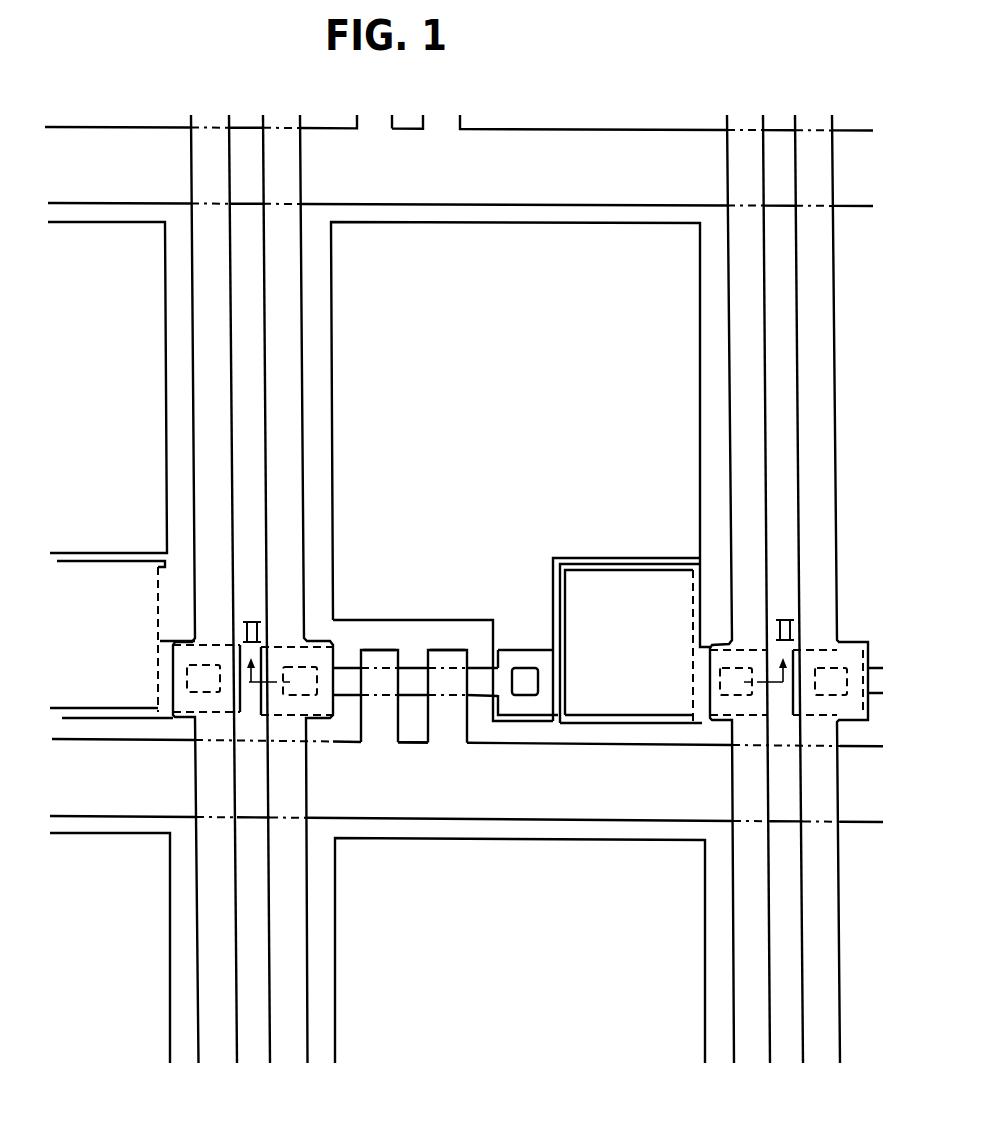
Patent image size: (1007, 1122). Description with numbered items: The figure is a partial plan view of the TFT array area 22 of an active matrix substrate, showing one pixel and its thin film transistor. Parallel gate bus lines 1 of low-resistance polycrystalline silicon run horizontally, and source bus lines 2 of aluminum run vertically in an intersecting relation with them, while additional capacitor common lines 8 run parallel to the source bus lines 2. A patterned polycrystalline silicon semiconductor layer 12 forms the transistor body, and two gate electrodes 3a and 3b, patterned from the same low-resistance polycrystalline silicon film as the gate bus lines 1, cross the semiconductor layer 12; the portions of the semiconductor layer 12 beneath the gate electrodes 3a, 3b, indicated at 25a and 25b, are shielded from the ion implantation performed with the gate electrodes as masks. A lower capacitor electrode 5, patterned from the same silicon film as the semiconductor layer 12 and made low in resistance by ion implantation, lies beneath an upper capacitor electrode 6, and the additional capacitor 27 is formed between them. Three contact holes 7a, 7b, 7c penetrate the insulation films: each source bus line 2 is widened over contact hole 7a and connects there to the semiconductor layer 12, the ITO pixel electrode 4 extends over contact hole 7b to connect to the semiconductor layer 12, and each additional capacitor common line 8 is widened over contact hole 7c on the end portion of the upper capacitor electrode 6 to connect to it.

The gate bus line 1 is at (438, 808).
The source bus line 2 is at (288, 372).
The gate electrode 3a is at (383, 658).
The gate electrode 3b is at (457, 658).
The pixel electrode 4 is at (500, 325).
The lower capacitor electrode 5 is at (613, 727).
The upper capacitor electrode 6 is at (677, 705).
The contact hole 7a is at (307, 697).
The contact hole 7b is at (523, 697).
The contact hole 7c is at (730, 697).
The additional capacitor common line 8 is at (213, 373).
The semiconductor layer 12 is at (417, 688).
The TFT array area 22 is at (628, 129).
The first channel region 25a is at (371, 651).
The second channel region 25b is at (443, 651).
The additional capacitor 27 is at (617, 559).